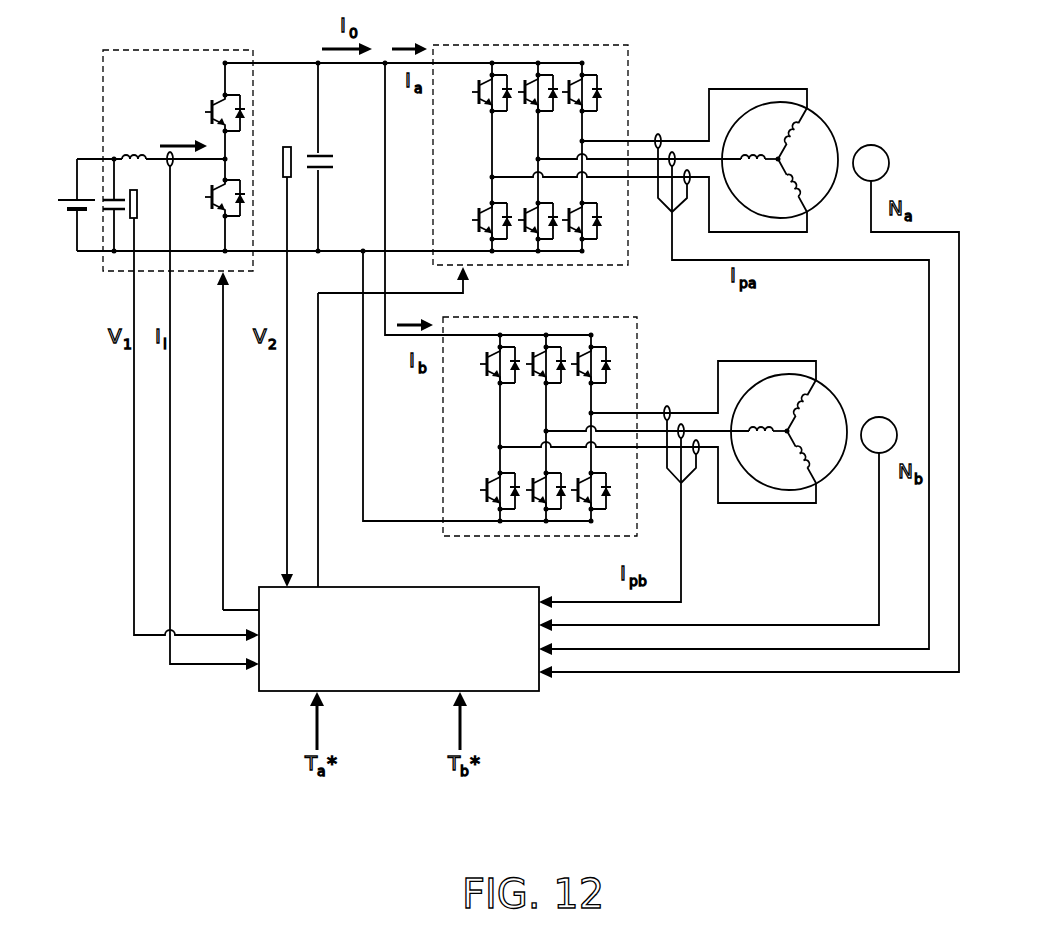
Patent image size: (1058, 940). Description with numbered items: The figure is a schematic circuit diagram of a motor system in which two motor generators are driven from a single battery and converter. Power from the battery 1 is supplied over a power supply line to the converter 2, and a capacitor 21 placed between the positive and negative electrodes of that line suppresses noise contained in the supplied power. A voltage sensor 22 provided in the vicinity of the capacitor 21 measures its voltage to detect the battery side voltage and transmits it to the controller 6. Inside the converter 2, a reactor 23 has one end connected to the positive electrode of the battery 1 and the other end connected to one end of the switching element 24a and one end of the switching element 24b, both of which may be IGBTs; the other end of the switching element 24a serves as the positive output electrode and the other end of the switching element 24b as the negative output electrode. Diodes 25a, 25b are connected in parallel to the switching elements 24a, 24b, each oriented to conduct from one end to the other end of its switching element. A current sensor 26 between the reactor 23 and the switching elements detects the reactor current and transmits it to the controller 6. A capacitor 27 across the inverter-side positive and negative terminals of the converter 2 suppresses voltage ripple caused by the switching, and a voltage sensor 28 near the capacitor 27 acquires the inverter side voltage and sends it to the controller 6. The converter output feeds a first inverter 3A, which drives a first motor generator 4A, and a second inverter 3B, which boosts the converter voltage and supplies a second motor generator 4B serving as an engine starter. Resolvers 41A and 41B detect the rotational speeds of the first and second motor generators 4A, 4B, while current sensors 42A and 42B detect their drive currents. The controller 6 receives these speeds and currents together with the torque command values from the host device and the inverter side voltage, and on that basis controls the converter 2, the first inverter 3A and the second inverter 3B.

The battery 1 is at (72, 192).
The converter 2 is at (103, 85).
The capacitor 21 is at (108, 216).
The voltage sensor 22 is at (131, 220).
The reactor 23 is at (139, 152).
The switching element 24a is at (206, 113).
The switching element 24b is at (207, 197).
The diode 25a is at (243, 100).
The diode 25b is at (241, 222).
The current sensor 26 is at (168, 151).
The capacitor 27 is at (326, 156).
The voltage sensor 28 is at (288, 178).
The first inverter 3A is at (629, 73).
The second inverter 3B is at (637, 343).
The first motor generator 4A is at (829, 114).
The second motor generator 4B is at (836, 386).
The resolver 41A is at (876, 145).
The resolver 41B is at (882, 417).
The current sensor 42A is at (683, 135).
The current sensor 42B is at (689, 410).
The controller 6 is at (476, 587).